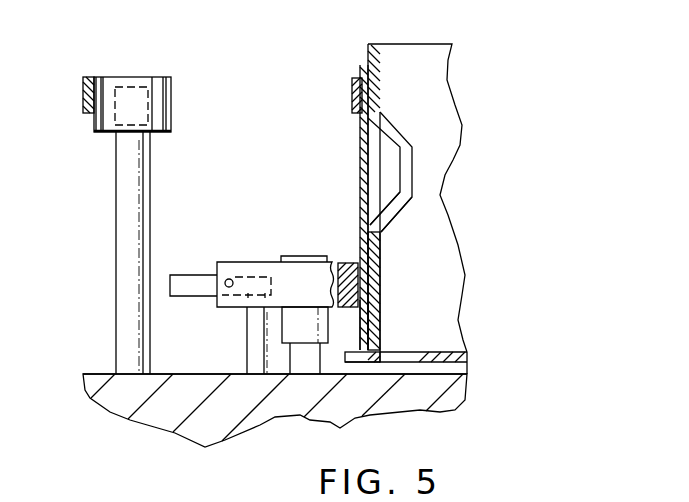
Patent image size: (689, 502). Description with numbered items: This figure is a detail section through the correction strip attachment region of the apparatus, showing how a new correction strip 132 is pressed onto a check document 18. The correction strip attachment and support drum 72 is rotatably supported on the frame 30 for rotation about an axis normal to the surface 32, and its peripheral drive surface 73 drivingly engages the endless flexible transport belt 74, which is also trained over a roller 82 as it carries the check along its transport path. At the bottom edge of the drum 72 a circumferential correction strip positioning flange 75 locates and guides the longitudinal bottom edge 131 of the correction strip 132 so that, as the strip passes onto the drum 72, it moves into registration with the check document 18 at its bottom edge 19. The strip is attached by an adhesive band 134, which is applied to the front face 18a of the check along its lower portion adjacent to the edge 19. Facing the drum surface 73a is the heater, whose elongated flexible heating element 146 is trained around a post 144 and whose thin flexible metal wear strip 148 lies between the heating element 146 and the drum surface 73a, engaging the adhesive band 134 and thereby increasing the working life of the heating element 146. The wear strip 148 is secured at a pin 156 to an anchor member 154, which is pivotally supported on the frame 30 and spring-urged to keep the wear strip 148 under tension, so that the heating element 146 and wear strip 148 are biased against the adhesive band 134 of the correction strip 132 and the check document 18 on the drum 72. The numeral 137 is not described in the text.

The check document 18 is at (366, 130).
The front face 18a is at (368, 222).
The bottom edge 19 is at (370, 294).
The frame 30 is at (100, 405).
The surface 32 is at (91, 373).
The correction strip attachment and support drum 72 is at (409, 44).
The peripheral drive surface 73 is at (367, 62).
The drum surface 73a is at (362, 343).
The transport belt 74 is at (86, 104).
The correction strip positioning flange 75 is at (330, 362).
The roller 82 is at (172, 96).
The longitudinal bottom edge 131 is at (366, 362).
The correction strip 132 is at (362, 323).
The adhesive band 134 is at (362, 277).
The column 137 is at (140, 176).
The post 144 is at (281, 333).
The heating element 146 is at (341, 263).
The wear strip 148 is at (230, 262).
The anchor member 154 is at (211, 292).
The pin 156 is at (233, 279).